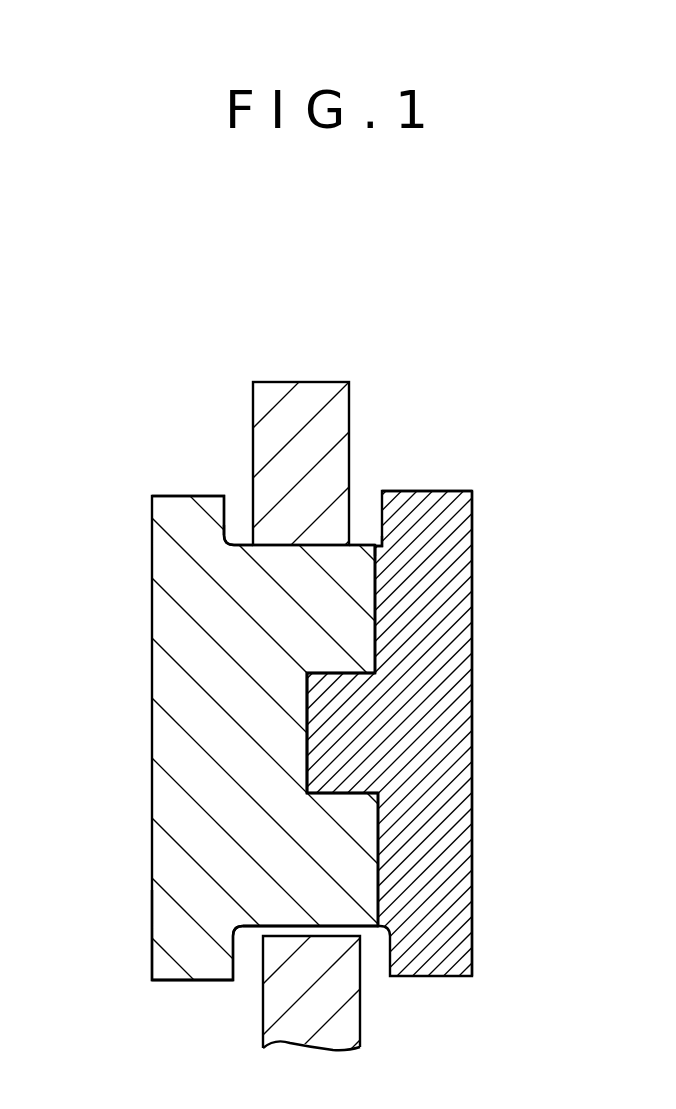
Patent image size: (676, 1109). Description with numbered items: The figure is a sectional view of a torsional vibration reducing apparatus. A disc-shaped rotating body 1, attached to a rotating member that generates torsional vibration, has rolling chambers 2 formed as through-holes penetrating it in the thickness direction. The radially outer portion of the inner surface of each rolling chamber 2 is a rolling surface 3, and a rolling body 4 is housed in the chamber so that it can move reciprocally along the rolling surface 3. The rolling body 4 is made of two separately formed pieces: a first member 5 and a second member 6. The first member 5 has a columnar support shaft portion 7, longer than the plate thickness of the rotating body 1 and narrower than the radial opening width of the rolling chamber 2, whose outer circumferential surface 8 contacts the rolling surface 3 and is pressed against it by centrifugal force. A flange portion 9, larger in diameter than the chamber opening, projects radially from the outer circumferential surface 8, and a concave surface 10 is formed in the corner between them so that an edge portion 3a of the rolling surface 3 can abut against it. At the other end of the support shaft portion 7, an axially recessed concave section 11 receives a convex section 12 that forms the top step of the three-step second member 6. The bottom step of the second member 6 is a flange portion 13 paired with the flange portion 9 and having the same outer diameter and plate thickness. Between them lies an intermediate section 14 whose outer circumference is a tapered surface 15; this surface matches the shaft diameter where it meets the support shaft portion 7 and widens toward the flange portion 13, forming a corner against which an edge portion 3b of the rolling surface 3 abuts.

The rotating body 1 is at (307, 405).
The rolling chamber 2 is at (327, 933).
The rolling surface 3 is at (303, 560).
The edge portion 3a is at (249, 545).
The edge portion 3b is at (364, 543).
The rolling body 4 is at (475, 488).
The first member 5 is at (83, 891).
The second member 6 is at (472, 622).
The support shaft portion 7 is at (303, 900).
The outer circumferential surface 8 is at (258, 928).
The flange portion 9 is at (188, 965).
The concave surface 10 is at (231, 534).
The concave section 11 is at (306, 708).
The convex section 12 is at (330, 730).
The flange portion 13 is at (425, 517).
The intermediate section 14 is at (377, 583).
The tapered surface 15 is at (377, 545).